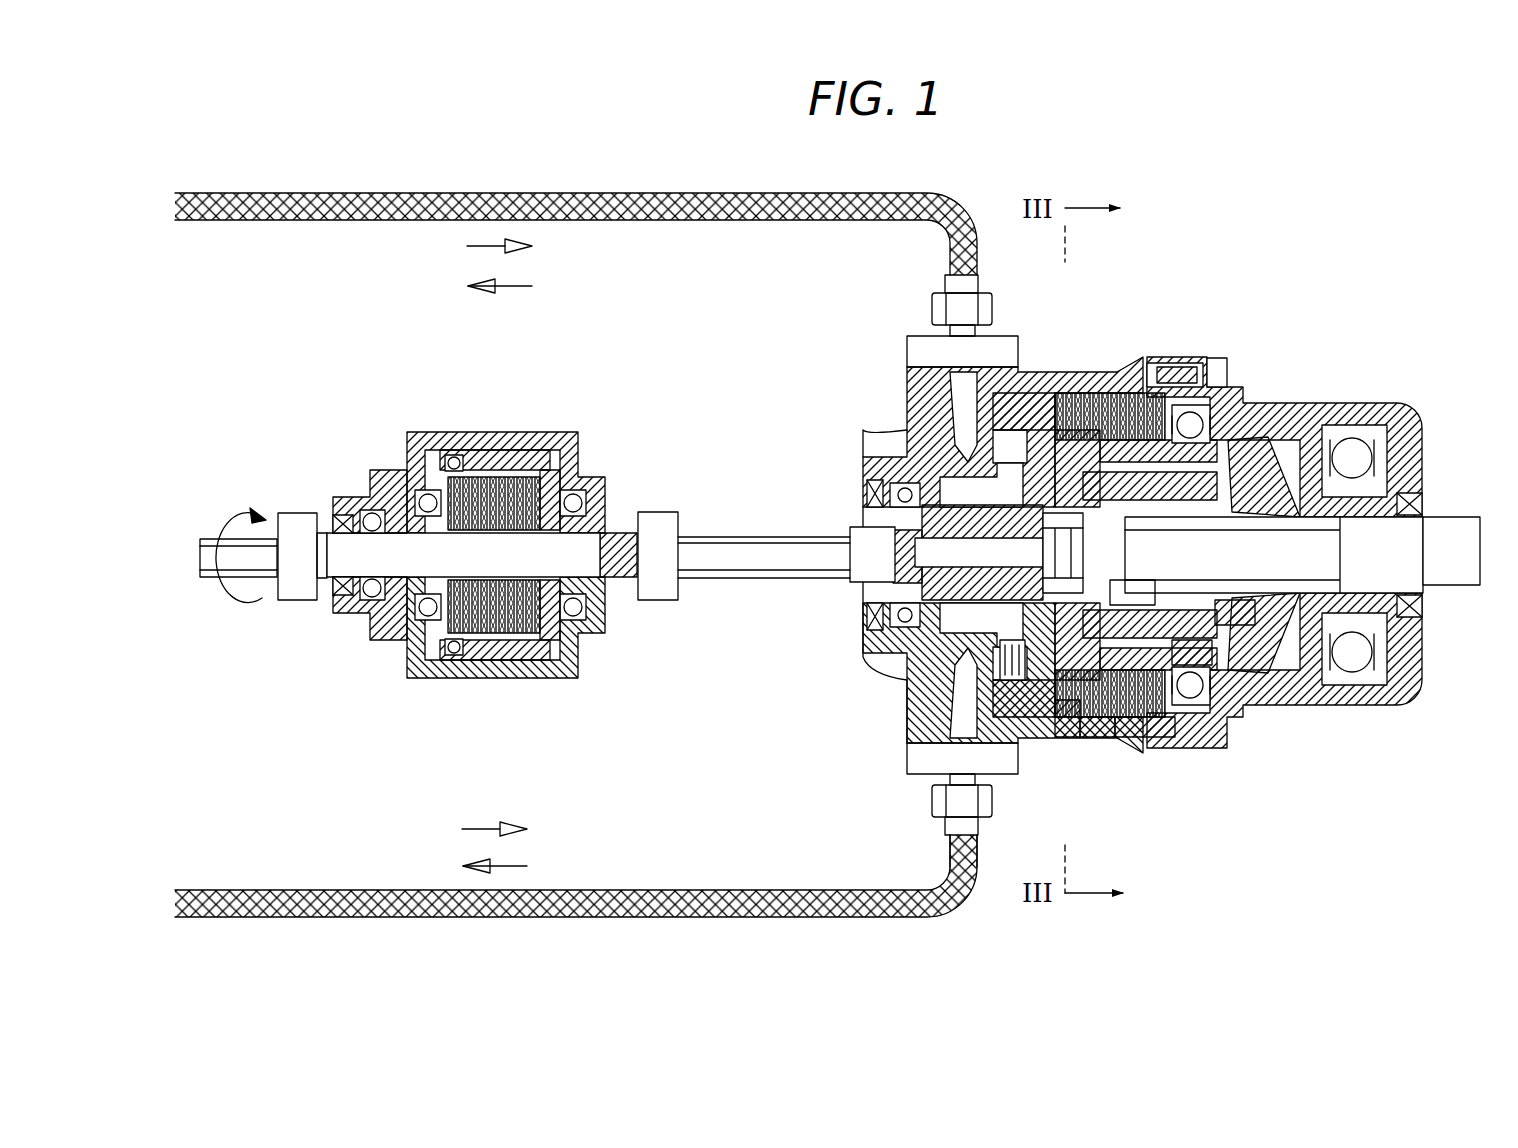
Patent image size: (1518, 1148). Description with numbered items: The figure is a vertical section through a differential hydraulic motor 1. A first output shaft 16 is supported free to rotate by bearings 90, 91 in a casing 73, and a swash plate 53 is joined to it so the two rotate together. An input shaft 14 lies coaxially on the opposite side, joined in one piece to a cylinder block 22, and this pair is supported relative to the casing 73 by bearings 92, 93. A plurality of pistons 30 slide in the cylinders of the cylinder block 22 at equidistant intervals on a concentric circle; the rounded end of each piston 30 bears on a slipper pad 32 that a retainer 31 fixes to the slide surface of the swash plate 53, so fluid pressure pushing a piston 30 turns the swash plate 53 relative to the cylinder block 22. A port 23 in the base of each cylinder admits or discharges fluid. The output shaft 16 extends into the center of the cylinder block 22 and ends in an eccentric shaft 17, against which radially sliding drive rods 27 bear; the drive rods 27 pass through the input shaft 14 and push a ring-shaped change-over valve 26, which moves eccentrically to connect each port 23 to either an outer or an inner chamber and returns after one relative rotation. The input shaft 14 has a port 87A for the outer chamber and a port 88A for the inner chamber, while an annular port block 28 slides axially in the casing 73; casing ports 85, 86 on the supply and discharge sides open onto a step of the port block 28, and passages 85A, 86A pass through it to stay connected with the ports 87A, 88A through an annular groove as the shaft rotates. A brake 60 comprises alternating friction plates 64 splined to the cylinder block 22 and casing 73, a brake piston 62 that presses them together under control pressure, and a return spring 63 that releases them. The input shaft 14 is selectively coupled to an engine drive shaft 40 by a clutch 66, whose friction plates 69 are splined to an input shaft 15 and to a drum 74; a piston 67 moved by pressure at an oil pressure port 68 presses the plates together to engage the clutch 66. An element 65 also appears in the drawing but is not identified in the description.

The differential hydraulic motor 1 is at (1368, 728).
The input shaft 14 is at (915, 480).
The input shaft 15 is at (327, 550).
The first output shaft 16 is at (1443, 535).
The eccentric shaft 17 is at (857, 572).
The cylinder block 22 is at (1233, 707).
The port 23 is at (1200, 366).
The ring-shaped change-over valve 26 is at (1103, 392).
The drive rods 27 is at (1068, 440).
The annular port block 28 is at (1025, 440).
The pistons 30 is at (1255, 670).
The retainer 31 is at (1320, 690).
The slipper pad 32 is at (1283, 690).
The engine drive shaft 40 is at (230, 555).
The swash plate 53 is at (1294, 410).
The brake 60 is at (1147, 395).
The brake piston 62 is at (1067, 707).
The return spring 63 is at (1090, 715).
The friction plates 64 is at (1133, 712).
The spring 65 is at (1030, 707).
The clutch 66 is at (500, 466).
The piston 67 is at (435, 655).
The oil pressure port 68 is at (385, 640).
The friction plates 69 is at (490, 645).
The casing 73 is at (1228, 402).
The drum 74 is at (565, 492).
The port 85 is at (907, 378).
The passage 85A is at (931, 807).
The port 86 is at (960, 712).
The passage 86A is at (905, 700).
The port 87A is at (1005, 773).
The port 88A is at (953, 800).
The bearing 90 is at (1356, 456).
The bearing 91 is at (1128, 572).
The bearing 92 is at (1207, 712).
The bearing 93 is at (908, 655).